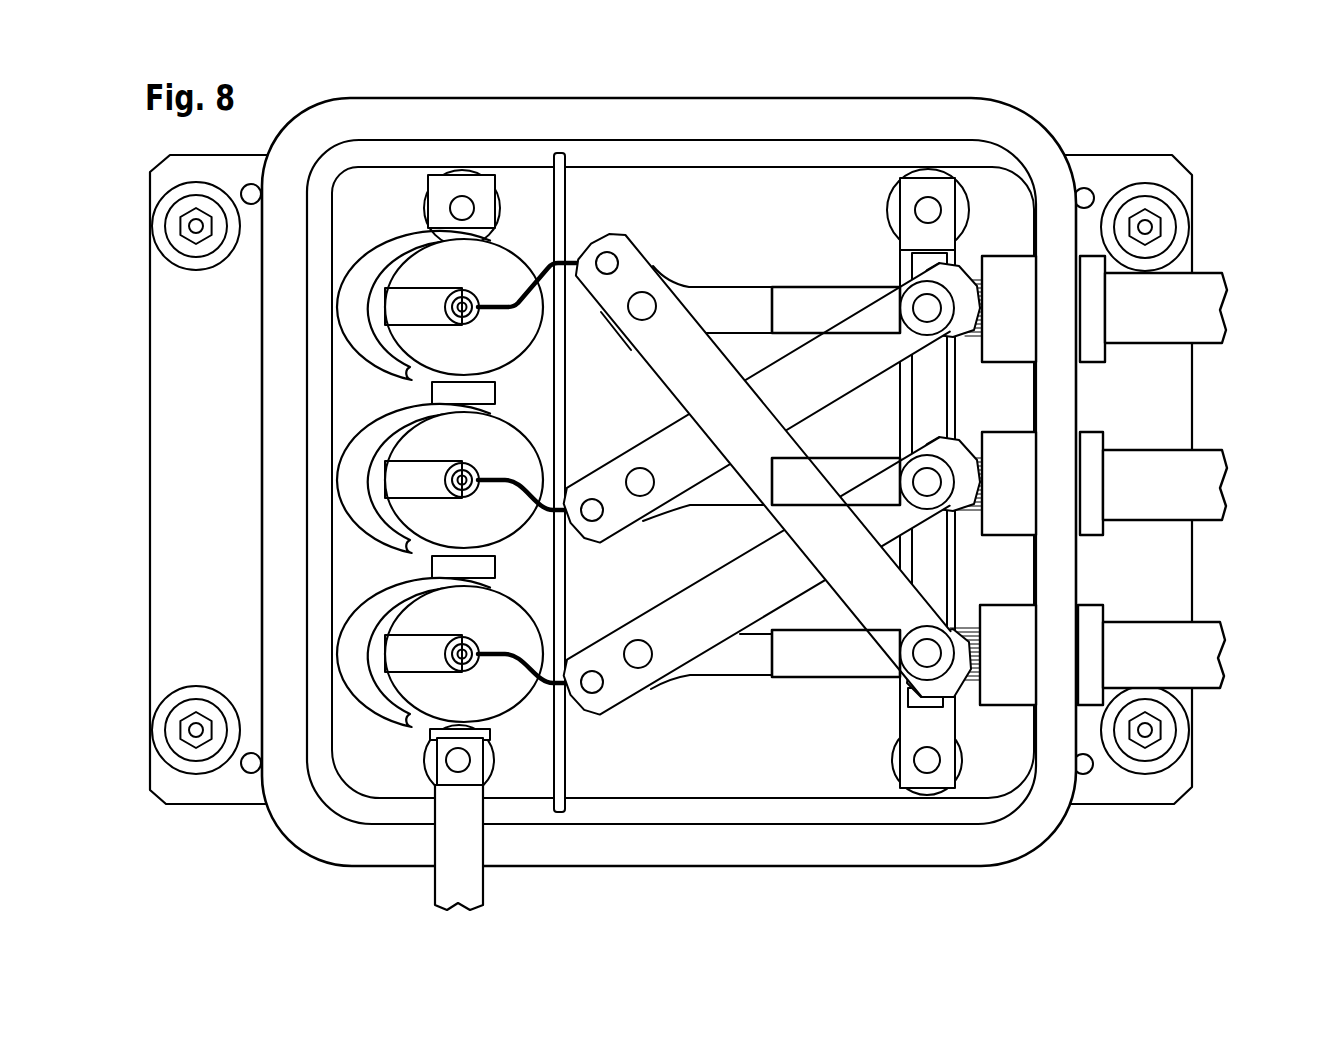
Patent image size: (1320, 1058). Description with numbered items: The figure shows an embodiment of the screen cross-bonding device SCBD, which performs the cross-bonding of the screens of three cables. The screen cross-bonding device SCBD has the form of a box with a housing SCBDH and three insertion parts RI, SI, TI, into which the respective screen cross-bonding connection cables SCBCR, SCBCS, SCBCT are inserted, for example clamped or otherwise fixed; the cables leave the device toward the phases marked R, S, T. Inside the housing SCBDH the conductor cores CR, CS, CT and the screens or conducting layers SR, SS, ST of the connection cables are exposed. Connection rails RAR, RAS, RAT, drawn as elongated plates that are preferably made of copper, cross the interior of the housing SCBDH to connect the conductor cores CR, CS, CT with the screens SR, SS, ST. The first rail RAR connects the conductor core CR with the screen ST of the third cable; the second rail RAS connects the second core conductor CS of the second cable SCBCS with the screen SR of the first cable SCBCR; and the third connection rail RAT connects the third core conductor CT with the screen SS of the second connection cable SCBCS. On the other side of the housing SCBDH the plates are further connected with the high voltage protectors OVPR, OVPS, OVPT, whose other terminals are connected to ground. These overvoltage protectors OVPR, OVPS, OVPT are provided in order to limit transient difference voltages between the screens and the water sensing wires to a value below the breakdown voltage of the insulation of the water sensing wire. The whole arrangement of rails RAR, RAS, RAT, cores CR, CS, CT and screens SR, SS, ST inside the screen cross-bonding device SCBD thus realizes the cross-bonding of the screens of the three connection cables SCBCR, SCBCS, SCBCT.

The screen cross-bonding device SCBD is at (1190, 136).
The housing SCBDH is at (865, 132).
The overvoltage protector OVPR is at (433, 262).
The overvoltage protector OVPS is at (427, 438).
The overvoltage protector OVPT is at (427, 615).
The conductor core CR is at (718, 298).
The conductor core CS is at (715, 490).
The conductor core CT is at (737, 657).
The first connection rail RAR is at (757, 443).
The second connection rail RAS is at (857, 379).
The third connection rail RAT is at (757, 610).
The screen SR is at (968, 338).
The screen SS is at (975, 513).
The screen ST is at (970, 628).
The insertion part RI is at (1093, 353).
The insertion part SI is at (1090, 527).
The insertion part TI is at (1088, 613).
The screen cross-bonding connection cable SCBCR is at (1166, 308).
The screen cross-bonding connection cable SCBCS is at (1165, 485).
The screen cross-bonding connection cable SCBCT is at (1164, 655).
The phase R line R is at (1248, 312).
The phase S line S is at (1245, 484).
The phase T line T is at (1239, 656).